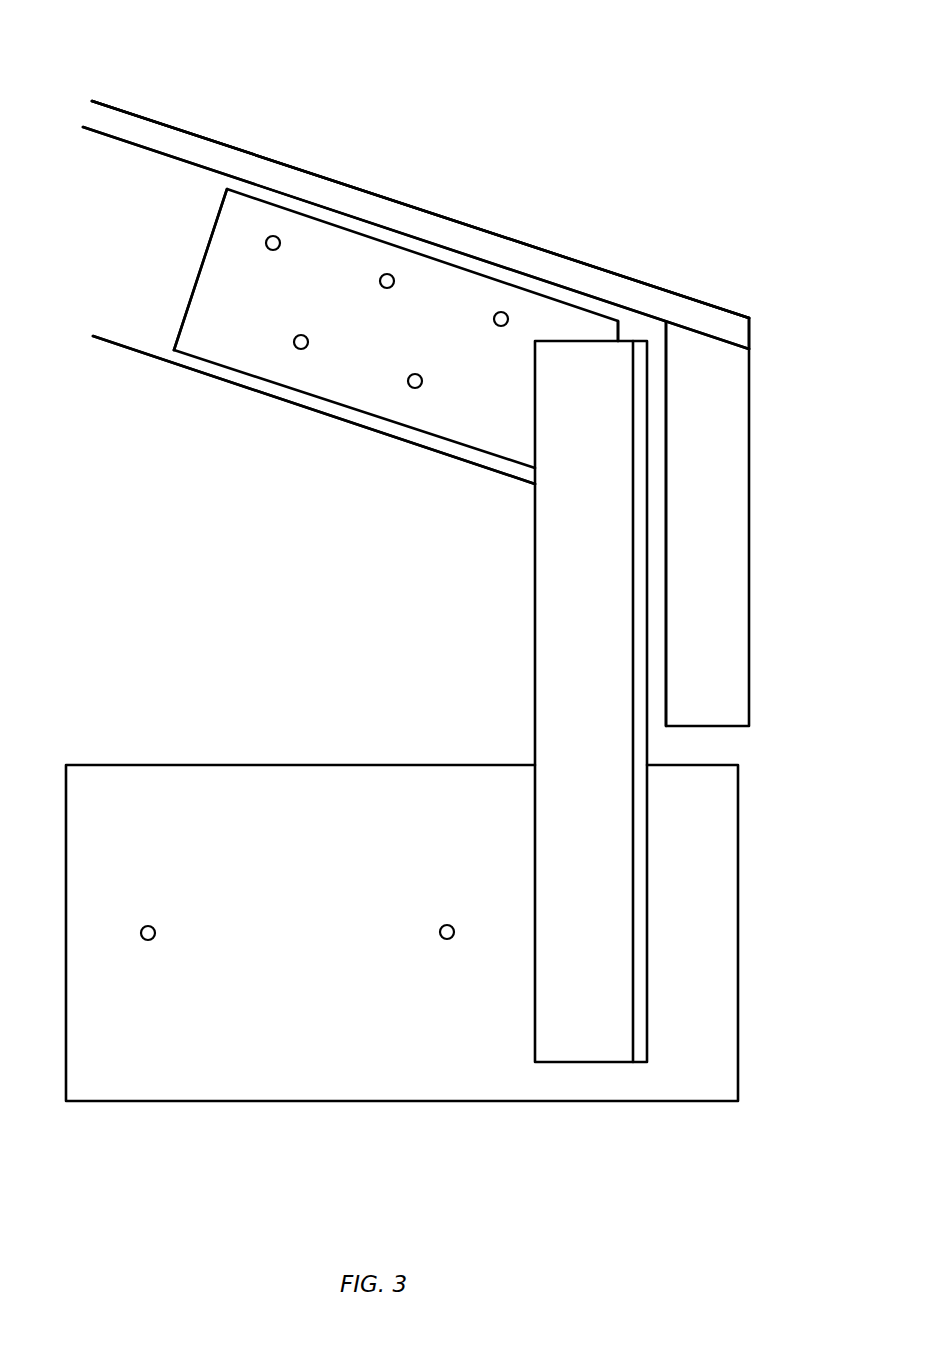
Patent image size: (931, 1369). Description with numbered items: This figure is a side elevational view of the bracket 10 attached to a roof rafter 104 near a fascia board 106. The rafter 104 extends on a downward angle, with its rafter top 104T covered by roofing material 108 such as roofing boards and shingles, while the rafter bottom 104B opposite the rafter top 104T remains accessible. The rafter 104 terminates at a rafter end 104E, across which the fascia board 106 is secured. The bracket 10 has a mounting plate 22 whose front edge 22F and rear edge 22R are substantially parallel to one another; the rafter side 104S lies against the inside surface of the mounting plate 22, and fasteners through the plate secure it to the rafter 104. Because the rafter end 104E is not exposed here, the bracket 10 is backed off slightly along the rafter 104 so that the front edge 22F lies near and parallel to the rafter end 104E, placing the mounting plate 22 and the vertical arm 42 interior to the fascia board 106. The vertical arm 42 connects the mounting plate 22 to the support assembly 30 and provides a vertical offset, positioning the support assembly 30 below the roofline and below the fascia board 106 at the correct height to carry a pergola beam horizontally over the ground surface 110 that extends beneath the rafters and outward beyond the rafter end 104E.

The bracket 10 is at (169, 1135).
The mounting plate 22 is at (387, 240).
The rear edge 22R is at (195, 283).
The front edge 22F is at (622, 334).
The support assembly 30 is at (284, 1102).
The vertical arm 42 is at (535, 630).
The roof rafter 104 is at (153, 360).
The rafter side 104S is at (125, 208).
The rafter top 104T is at (175, 155).
The rafter bottom 104B is at (424, 447).
The rafter end 104E is at (667, 447).
The fascia board 106 is at (750, 575).
The roofing material 108 is at (518, 253).
The ground surface 110 is at (270, 413).